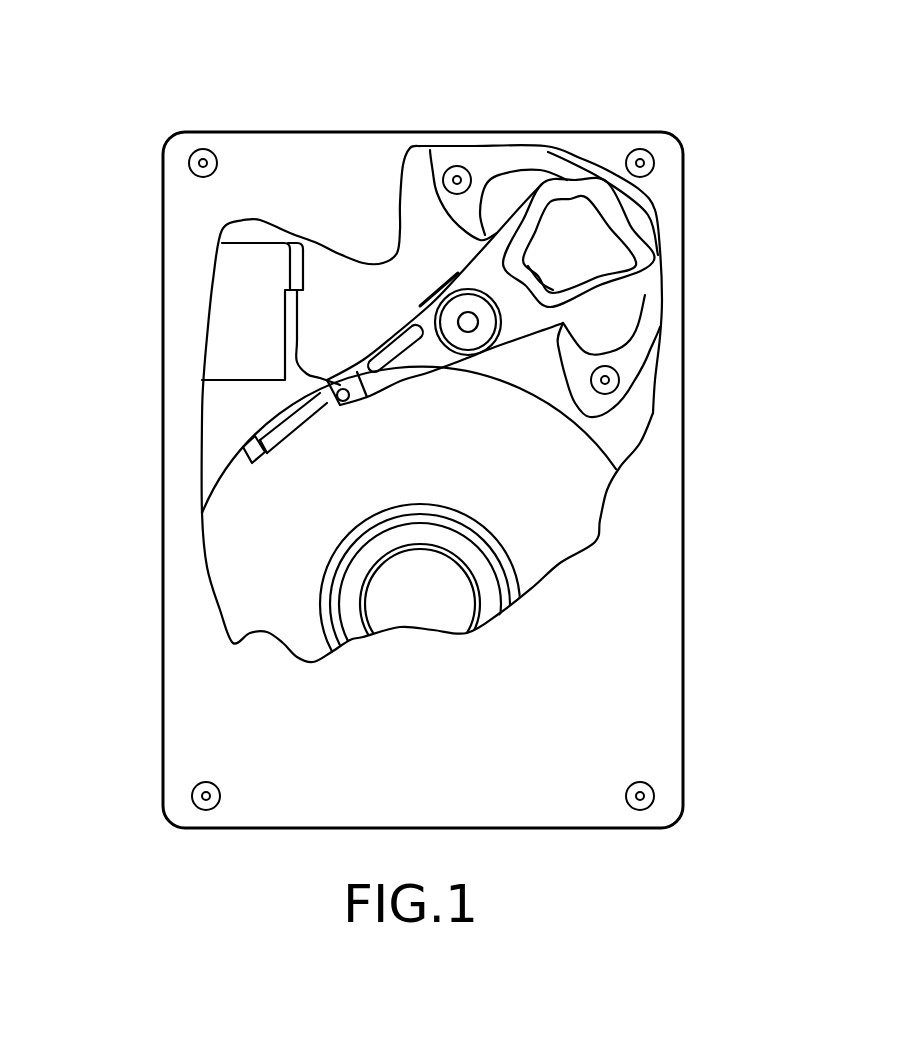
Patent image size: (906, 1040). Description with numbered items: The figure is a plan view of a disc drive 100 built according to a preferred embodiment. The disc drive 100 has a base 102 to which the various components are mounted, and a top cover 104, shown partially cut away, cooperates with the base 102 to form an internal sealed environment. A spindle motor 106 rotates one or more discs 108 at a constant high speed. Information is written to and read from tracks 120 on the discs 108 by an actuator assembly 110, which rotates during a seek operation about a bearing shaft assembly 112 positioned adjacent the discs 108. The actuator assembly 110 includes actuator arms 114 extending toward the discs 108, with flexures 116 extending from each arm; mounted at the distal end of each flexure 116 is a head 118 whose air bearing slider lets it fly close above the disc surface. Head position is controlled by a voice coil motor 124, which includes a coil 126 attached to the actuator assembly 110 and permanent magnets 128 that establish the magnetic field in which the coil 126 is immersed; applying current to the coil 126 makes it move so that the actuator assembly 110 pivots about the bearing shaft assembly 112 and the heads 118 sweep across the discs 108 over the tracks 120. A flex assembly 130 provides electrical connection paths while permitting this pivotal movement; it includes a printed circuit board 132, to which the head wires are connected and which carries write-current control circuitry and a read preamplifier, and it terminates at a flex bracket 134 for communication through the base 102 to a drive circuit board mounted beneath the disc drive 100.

The disc drive 100 is at (200, 93).
The base 102 is at (227, 430).
The top cover 104 is at (207, 688).
The spindle motor 106 is at (418, 607).
The disc 108 is at (567, 530).
The actuator assembly 110 is at (433, 383).
The bearing shaft assembly 112 is at (468, 322).
The actuator arm 114 is at (410, 390).
The flexure 116 is at (293, 427).
The head 118 is at (242, 460).
The track 120 is at (317, 593).
The voice coil motor 124 is at (497, 142).
The coil 126 is at (633, 243).
The permanent magnet 128 is at (497, 207).
The flex assembly 130 is at (397, 333).
The printed circuit board 132 is at (440, 293).
The flex bracket 134 is at (240, 322).